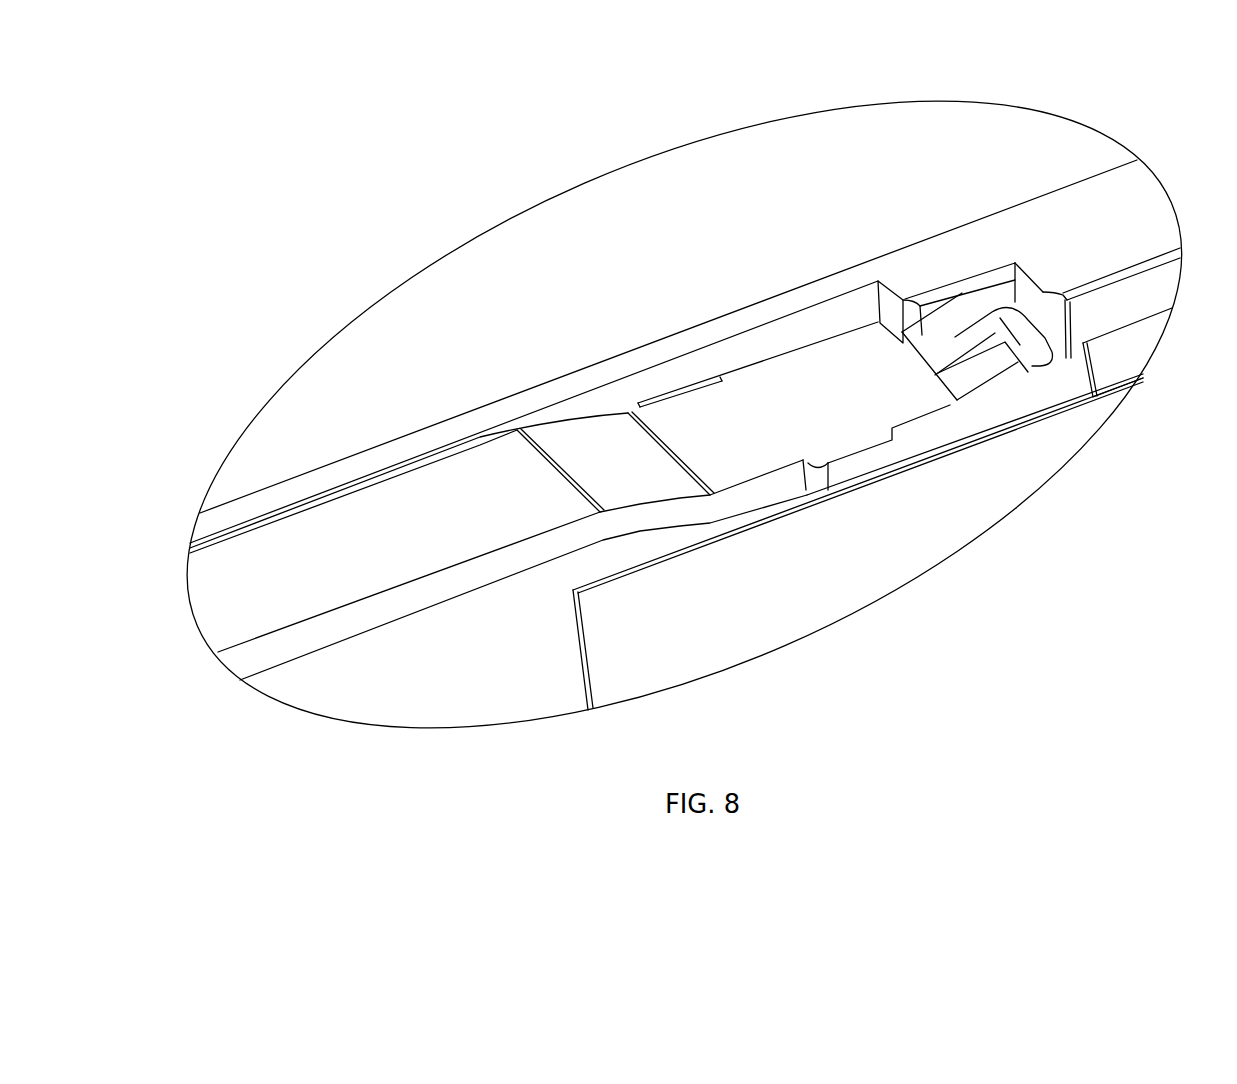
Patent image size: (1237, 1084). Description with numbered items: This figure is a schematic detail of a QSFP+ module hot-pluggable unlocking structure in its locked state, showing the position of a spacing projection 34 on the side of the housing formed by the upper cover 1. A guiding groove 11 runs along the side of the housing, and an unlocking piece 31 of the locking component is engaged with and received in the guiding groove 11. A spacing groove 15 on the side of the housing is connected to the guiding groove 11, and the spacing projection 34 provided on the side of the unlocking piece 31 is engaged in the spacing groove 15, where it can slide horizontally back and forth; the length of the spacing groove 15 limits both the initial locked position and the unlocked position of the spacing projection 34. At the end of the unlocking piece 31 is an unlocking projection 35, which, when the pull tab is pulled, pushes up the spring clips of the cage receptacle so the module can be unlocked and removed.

The upper cover 1 is at (710, 435).
The guiding groove 11 is at (1096, 377).
The spacing groove 15 is at (717, 554).
The unlocking piece 31 is at (602, 401).
The spacing projection 34 is at (680, 395).
The unlocking projection 35 is at (923, 228).